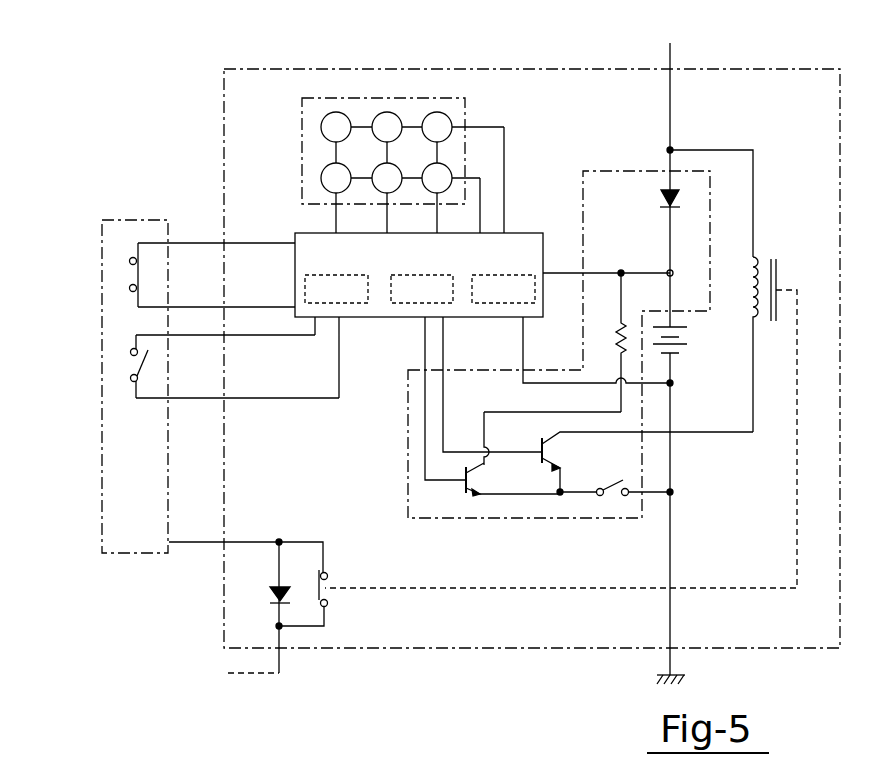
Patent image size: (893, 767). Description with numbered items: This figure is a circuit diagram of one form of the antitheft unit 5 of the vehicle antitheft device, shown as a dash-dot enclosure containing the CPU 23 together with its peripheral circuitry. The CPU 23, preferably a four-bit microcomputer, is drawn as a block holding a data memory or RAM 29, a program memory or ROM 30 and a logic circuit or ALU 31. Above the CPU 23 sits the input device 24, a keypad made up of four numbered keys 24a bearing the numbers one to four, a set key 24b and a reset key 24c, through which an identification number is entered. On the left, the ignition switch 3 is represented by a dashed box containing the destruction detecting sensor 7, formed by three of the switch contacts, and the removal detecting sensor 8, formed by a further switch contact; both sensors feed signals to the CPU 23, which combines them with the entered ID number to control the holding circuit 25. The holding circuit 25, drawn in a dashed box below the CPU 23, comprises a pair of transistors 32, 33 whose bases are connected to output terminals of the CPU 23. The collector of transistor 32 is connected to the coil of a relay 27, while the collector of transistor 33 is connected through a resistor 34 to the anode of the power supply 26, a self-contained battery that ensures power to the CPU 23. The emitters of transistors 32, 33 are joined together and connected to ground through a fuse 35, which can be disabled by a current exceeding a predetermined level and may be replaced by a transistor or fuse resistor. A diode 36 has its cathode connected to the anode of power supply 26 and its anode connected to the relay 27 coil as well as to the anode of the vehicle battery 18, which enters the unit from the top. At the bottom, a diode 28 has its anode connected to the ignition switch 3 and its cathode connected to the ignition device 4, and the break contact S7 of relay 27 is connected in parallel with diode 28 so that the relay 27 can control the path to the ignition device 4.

The battery 18 is at (676, 165).
The input device 24 is at (406, 123).
The numbered keys 24a is at (326, 115).
The set key 24b is at (377, 188).
The reset key 24c is at (448, 165).
The CPU 23 is at (427, 279).
The data memory (RAM) 29 is at (352, 304).
The program memory (ROM) 30 is at (412, 275).
The logic circuit (ALU) 31 is at (508, 305).
The ignition switch 3 is at (152, 220).
The destruction detecting sensor 7 is at (129, 270).
The removal detecting sensor 8 is at (131, 366).
The resistor 34 is at (621, 323).
The diode 36 is at (661, 196).
The power supply 26 is at (684, 346).
The relay 27 is at (777, 265).
The fuse 35 is at (605, 488).
The transistor 33 is at (466, 487).
The transistor 32 is at (540, 458).
The holding circuit 25 is at (573, 518).
The diode 28 is at (269, 600).
The break contact S7 is at (306, 603).
The ignition device 4 is at (230, 673).
The antitheft unit 5 is at (440, 648).